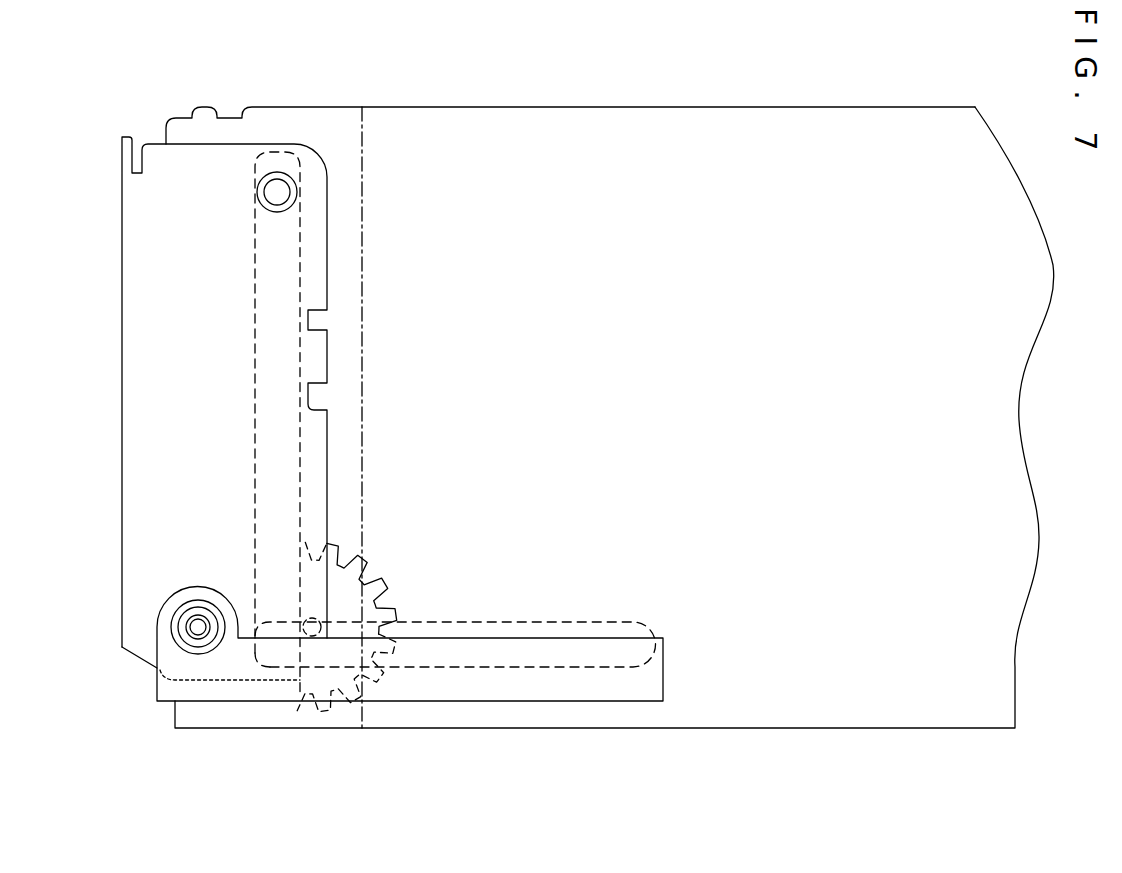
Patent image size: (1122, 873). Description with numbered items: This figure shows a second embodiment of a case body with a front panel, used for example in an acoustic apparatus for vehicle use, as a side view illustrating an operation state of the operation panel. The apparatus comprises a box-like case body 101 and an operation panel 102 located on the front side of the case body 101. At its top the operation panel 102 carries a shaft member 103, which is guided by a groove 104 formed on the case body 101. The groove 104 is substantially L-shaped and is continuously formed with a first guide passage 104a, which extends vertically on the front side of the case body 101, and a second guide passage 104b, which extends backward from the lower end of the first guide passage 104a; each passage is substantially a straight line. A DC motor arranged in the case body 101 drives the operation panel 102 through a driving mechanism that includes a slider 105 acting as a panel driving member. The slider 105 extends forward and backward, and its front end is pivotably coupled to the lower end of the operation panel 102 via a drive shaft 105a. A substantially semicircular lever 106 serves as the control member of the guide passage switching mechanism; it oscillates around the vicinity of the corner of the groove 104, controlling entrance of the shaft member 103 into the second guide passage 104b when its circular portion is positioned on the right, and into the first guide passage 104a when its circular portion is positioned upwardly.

The case body 101 is at (362, 353).
The operation panel 102 is at (123, 275).
The shaft member 103 is at (270, 188).
The groove 104 is at (342, 481).
The first guide passage 104a is at (245, 428).
The second guide passage 104b is at (597, 667).
The slider 105 is at (513, 682).
The drive shaft 105a is at (190, 631).
The lever 106 is at (375, 585).